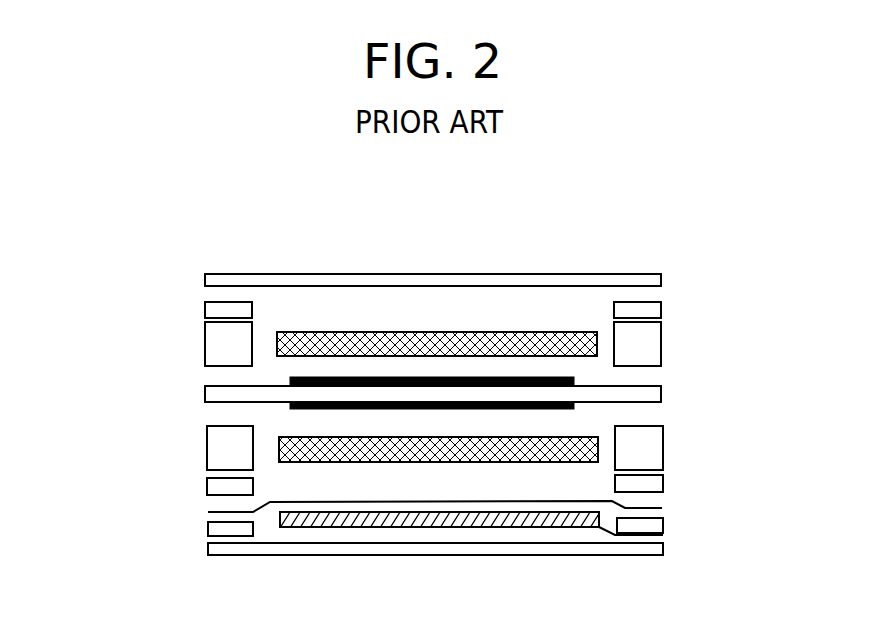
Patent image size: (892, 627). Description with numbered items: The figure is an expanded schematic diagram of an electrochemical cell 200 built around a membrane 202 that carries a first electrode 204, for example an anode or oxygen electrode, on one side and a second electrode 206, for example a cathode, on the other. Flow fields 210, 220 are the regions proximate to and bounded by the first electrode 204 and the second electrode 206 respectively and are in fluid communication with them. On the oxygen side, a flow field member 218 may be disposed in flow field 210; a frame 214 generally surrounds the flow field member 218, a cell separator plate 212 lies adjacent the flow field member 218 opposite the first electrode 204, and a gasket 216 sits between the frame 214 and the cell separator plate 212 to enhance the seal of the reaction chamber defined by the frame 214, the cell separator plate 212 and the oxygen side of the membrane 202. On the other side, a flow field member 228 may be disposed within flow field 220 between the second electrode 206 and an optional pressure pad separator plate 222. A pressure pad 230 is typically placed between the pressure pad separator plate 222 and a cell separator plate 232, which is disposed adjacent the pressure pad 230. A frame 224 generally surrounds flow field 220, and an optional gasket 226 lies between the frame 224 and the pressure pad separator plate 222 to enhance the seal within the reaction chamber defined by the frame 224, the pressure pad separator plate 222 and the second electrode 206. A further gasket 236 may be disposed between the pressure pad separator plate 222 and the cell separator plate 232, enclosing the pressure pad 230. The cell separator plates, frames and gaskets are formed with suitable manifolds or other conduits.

The cell 200 is at (227, 242).
The membrane 202 is at (663, 392).
The first electrode 204 is at (290, 381).
The second electrode 206 is at (290, 408).
The flow field 210 is at (460, 314).
The cell separator plate 212 is at (663, 277).
The frame 214 is at (663, 341).
The gasket 216 is at (204, 310).
The flow field member 218 is at (480, 331).
The flow field 220 is at (475, 492).
The pressure pad separator plate 222 is at (660, 508).
The frame 224 is at (663, 447).
The gasket 226 is at (207, 488).
The flow field member 228 is at (456, 437).
The pressure pad 230 is at (663, 535).
The cell separator plate 232 is at (663, 546).
The gasket 236 is at (208, 530).